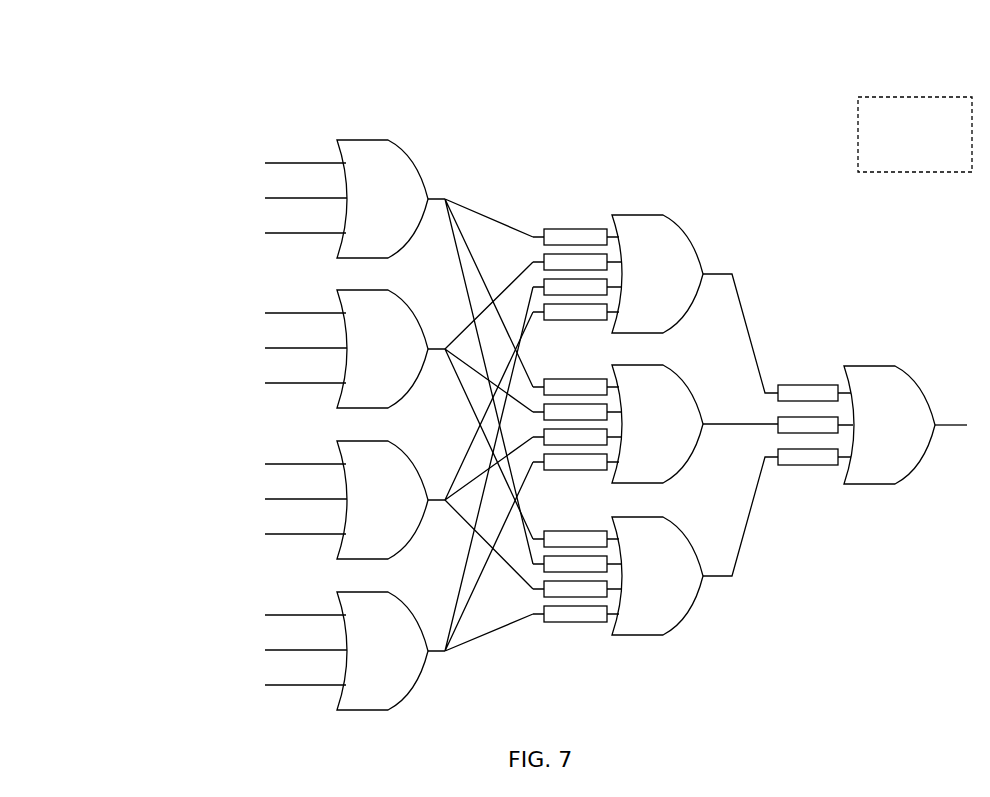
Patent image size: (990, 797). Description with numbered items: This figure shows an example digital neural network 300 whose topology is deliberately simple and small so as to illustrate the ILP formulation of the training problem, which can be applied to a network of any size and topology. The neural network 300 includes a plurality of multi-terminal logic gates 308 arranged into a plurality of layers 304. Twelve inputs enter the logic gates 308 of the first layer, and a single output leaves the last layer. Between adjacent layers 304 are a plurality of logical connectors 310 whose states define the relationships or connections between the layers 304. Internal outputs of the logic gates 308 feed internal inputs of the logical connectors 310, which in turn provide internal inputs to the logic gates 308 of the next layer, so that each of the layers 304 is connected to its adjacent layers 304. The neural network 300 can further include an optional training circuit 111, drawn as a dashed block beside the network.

The digital neural network 300 is at (202, 80).
The layers 304 is at (318, 55).
The multi-terminal logic gates 308 is at (362, 139).
The logical connectors 310 is at (547, 183).
The training circuit 111 is at (886, 96).